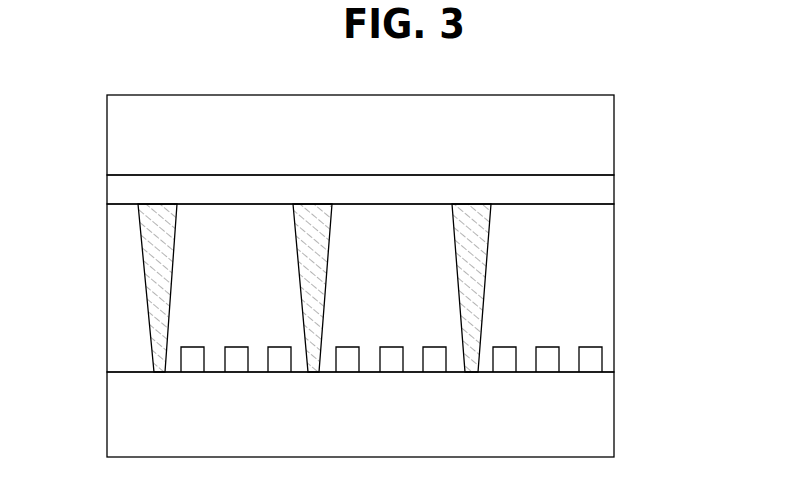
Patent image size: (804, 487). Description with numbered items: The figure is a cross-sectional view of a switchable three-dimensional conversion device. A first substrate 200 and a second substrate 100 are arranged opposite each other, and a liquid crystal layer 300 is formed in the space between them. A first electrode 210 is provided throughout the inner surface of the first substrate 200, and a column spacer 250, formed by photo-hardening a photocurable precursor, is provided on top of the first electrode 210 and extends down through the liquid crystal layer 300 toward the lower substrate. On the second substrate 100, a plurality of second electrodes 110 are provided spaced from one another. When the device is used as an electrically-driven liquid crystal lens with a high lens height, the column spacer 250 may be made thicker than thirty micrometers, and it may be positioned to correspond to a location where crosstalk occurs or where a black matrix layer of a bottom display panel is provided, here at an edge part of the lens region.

The second substrate 100 is at (592, 419).
The second electrodes 110 is at (592, 360).
The liquid crystal layer 300 is at (592, 243).
The column spacer 250 is at (157, 283).
The first electrode 210 is at (592, 188).
The first substrate 200 is at (592, 139).